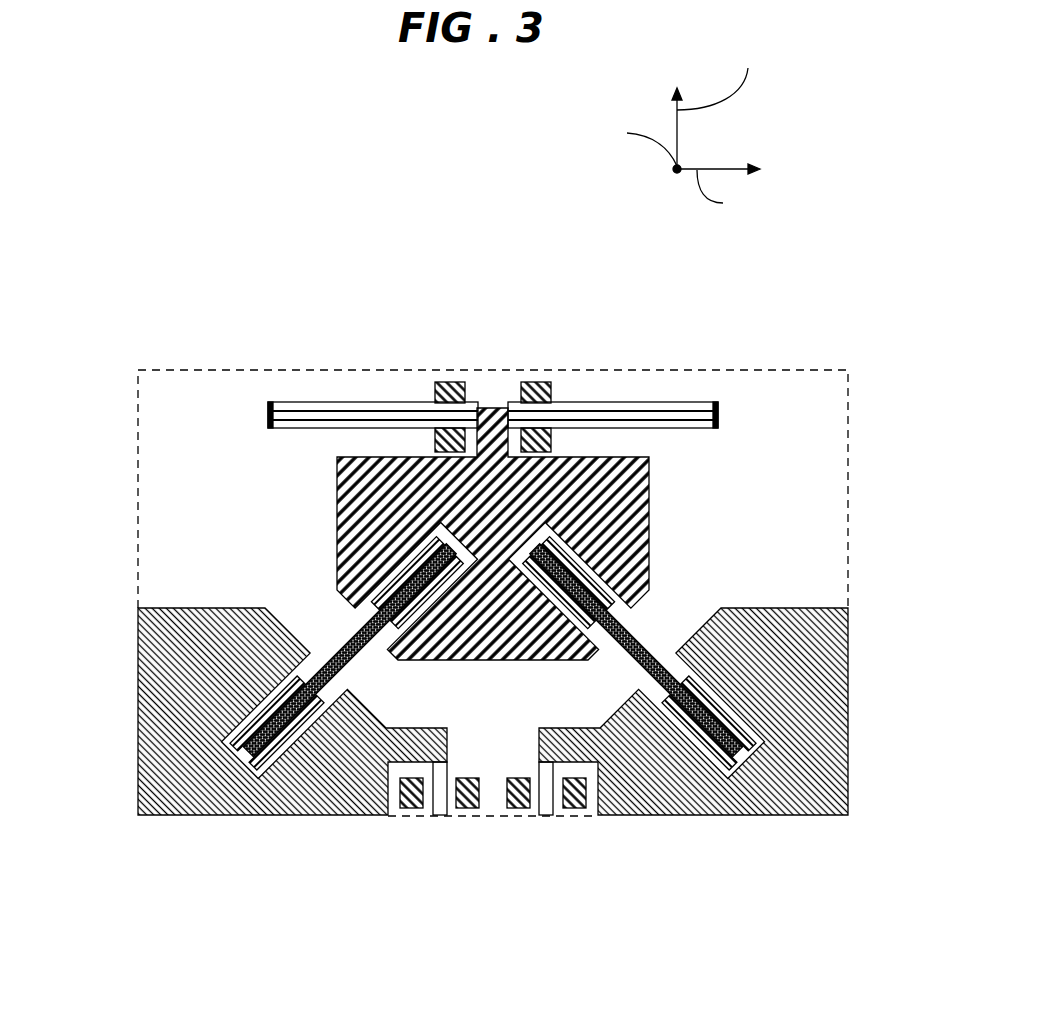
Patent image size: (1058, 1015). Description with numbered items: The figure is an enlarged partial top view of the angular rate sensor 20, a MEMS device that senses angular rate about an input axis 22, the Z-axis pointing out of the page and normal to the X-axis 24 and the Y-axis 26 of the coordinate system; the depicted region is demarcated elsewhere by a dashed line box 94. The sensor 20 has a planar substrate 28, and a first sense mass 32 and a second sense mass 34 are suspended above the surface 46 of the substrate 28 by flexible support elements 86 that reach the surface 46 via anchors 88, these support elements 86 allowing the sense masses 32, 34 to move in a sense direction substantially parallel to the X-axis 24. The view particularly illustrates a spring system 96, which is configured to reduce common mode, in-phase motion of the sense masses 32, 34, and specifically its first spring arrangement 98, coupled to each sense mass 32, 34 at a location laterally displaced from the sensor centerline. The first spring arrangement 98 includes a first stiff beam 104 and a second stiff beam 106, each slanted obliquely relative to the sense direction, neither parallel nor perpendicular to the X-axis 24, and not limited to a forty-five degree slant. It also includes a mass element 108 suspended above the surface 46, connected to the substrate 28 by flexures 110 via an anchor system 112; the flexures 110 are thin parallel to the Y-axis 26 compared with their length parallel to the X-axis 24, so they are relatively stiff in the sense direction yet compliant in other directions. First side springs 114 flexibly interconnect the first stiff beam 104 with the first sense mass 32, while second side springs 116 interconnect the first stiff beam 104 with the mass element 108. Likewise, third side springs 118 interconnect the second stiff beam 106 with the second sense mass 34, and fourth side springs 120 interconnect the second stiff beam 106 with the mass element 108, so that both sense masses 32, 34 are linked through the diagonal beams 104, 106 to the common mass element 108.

The angular rate sensor 20 is at (516, 989).
The input axis 22 is at (677, 172).
The X-axis 24 is at (722, 168).
The Y-axis 26 is at (677, 105).
The planar substrate 28 is at (151, 420).
The first sense mass 32 is at (143, 670).
The second sense mass 34 is at (840, 672).
The surface 46 is at (169, 404).
The flexible support elements 86 is at (437, 808).
The anchors 88 is at (405, 808).
The dashed line box 94 is at (270, 358).
The spring system 96 is at (472, 340).
The first spring arrangement 98 is at (700, 491).
The first stiff beam 104 is at (346, 638).
The second stiff beam 106 is at (641, 640).
The mass element 108 is at (337, 457).
The flexures 110 is at (303, 402).
The anchor system 112 is at (455, 437).
The first side springs 114 is at (257, 710).
The second side springs 116 is at (423, 549).
The third side springs 118 is at (705, 750).
The fourth side springs 120 is at (566, 548).